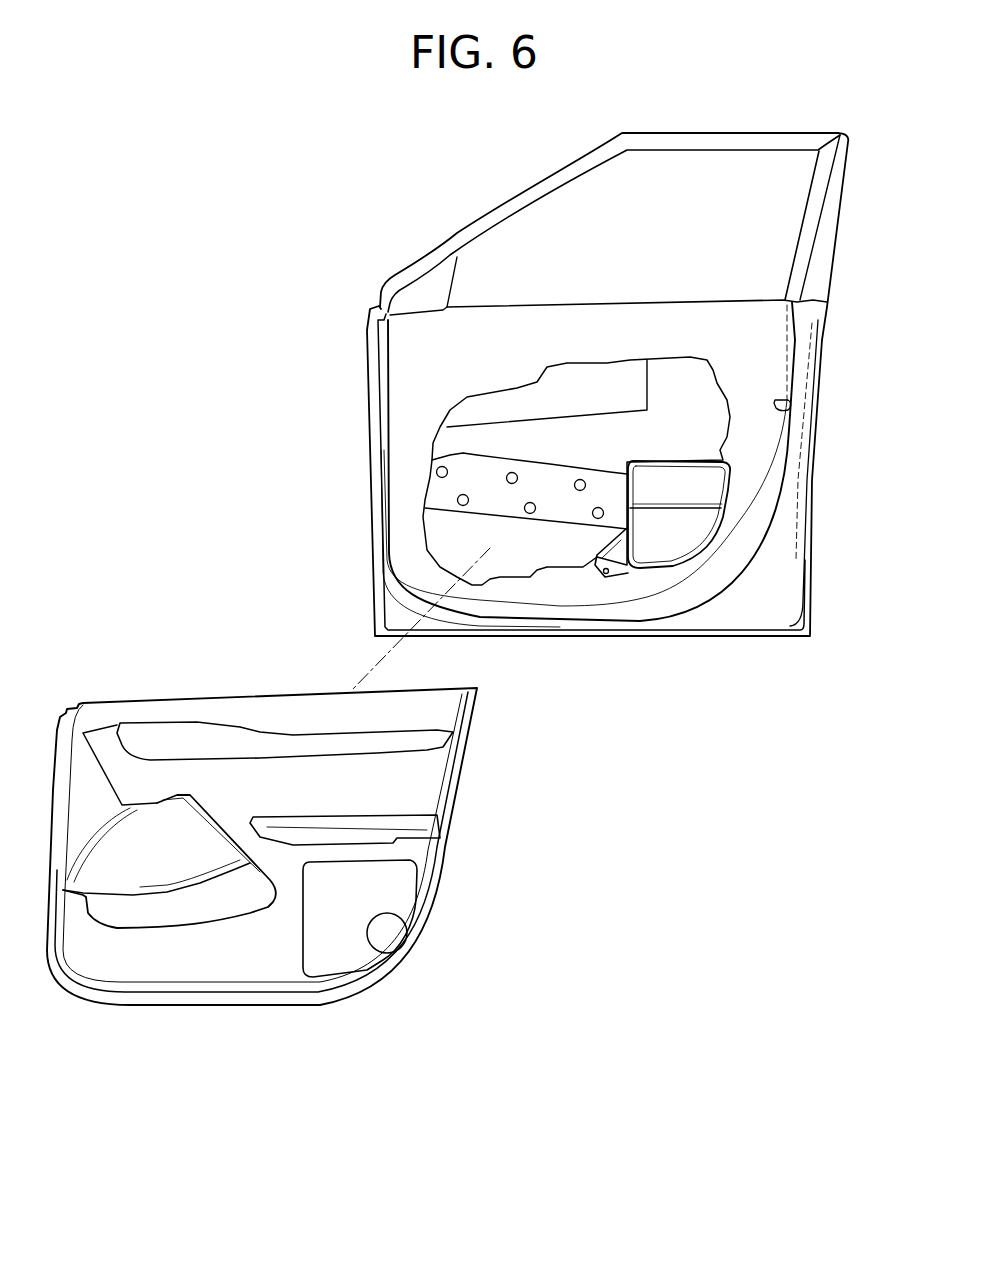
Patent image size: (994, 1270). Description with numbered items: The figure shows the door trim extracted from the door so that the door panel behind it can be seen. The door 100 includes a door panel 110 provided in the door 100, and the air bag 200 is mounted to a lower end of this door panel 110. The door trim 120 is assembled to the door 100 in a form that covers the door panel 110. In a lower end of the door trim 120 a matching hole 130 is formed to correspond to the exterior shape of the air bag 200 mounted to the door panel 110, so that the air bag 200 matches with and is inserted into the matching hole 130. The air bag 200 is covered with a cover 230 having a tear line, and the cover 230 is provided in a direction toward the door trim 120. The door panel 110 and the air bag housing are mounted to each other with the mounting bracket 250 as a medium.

The door 100 is at (448, 218).
The door panel 110 is at (718, 553).
The door trim 120 is at (235, 960).
The matching hole 130 is at (400, 970).
The air bag 200 is at (722, 523).
The cover 230 is at (668, 545).
The mounting bracket 250 is at (601, 575).